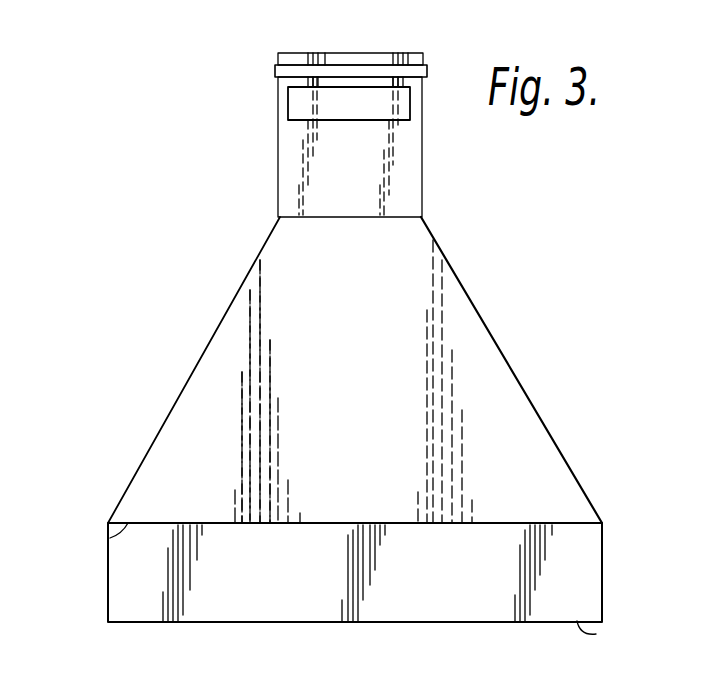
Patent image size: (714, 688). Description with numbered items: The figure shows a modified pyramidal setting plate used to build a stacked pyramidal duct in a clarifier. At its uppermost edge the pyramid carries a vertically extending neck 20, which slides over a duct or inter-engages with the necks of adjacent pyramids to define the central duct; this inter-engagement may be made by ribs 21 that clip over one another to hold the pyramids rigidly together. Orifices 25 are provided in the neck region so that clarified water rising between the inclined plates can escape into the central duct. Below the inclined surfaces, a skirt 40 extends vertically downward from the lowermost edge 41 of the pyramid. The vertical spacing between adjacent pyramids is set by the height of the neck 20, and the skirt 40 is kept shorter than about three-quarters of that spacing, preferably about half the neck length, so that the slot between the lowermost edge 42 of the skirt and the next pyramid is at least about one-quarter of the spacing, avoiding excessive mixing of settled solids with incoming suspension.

The neck 20 is at (320, 163).
The rib 21 is at (278, 71).
The orifice 25 is at (303, 105).
The skirt 40 is at (130, 579).
The lowermost edge of the pyramid 41 is at (110, 538).
The lowermost edge of the skirt 42 is at (596, 634).